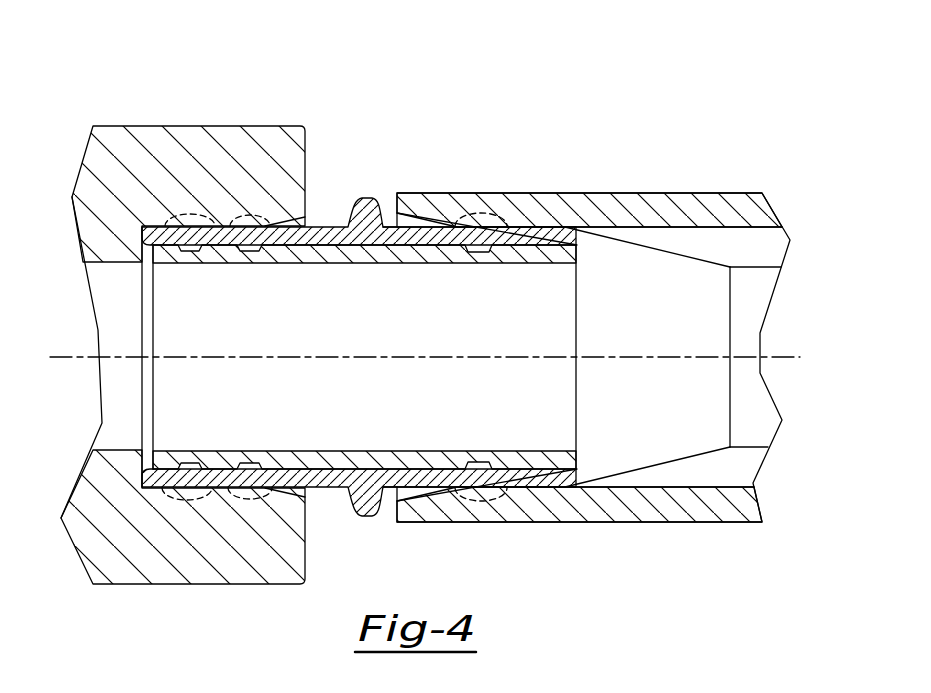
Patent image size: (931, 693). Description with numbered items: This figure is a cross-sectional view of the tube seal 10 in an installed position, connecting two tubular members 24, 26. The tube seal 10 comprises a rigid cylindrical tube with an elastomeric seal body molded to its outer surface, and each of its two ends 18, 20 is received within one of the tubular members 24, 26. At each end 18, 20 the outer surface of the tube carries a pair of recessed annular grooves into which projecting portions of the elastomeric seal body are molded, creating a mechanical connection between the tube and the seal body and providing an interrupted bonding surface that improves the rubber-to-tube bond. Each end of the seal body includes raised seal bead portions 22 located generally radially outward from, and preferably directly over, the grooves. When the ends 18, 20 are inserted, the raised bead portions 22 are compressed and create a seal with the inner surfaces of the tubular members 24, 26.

The tube seal 10 is at (366, 168).
The end 18 is at (183, 263).
The end 20 is at (540, 452).
The raised seal bead portion 22 is at (187, 480).
The tubular member 24 is at (183, 126).
The tubular member 26 is at (626, 193).